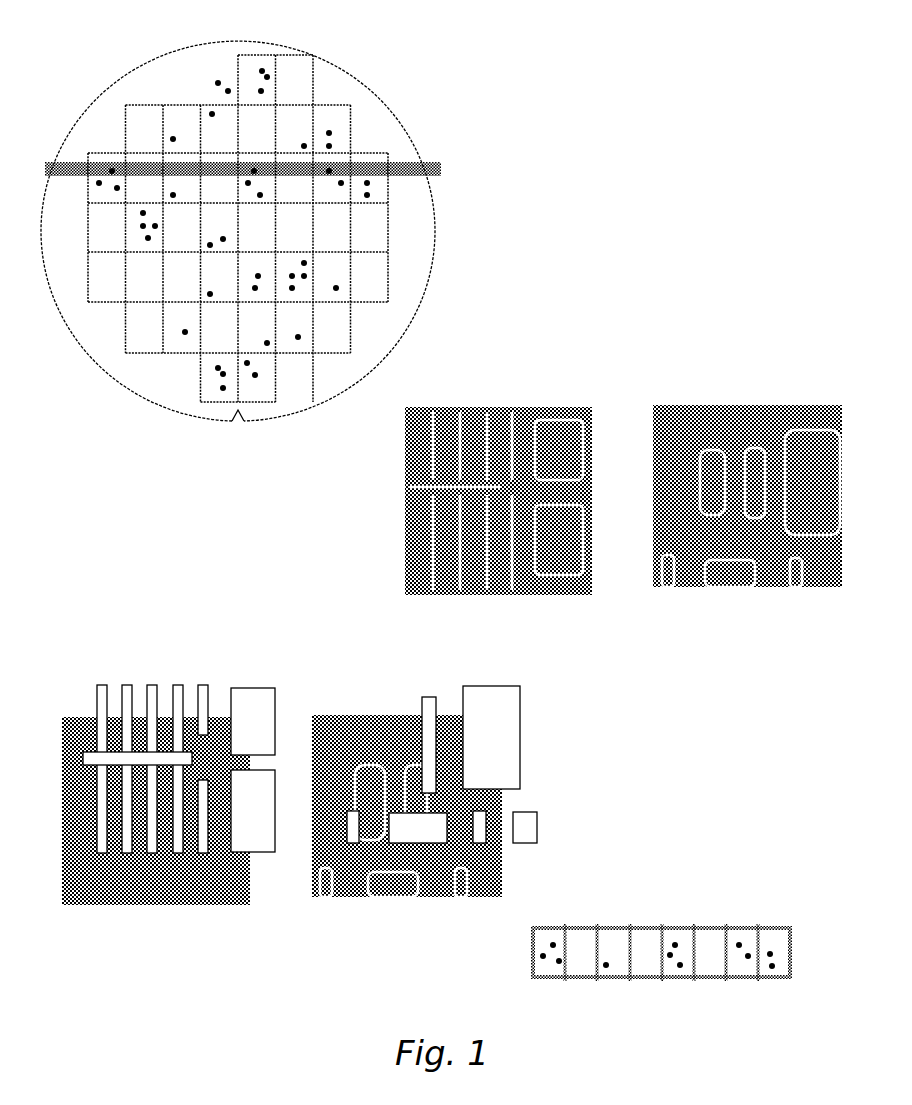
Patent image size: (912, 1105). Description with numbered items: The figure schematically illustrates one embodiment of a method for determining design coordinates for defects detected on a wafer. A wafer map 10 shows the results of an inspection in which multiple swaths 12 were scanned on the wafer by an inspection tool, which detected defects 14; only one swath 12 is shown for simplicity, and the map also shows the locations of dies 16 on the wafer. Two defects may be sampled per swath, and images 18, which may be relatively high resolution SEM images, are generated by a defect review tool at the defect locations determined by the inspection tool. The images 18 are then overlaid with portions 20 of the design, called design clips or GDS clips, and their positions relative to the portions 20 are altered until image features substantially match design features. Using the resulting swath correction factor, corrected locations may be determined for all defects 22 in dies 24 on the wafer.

The wafer map 10 is at (414, 108).
The swath 12 is at (434, 170).
The defects 14 is at (265, 87).
The dies 16 is at (262, 55).
The images 18 is at (553, 406).
The portions of the design 20 is at (248, 688).
The defects 22 is at (767, 953).
The dies 24 is at (703, 942).